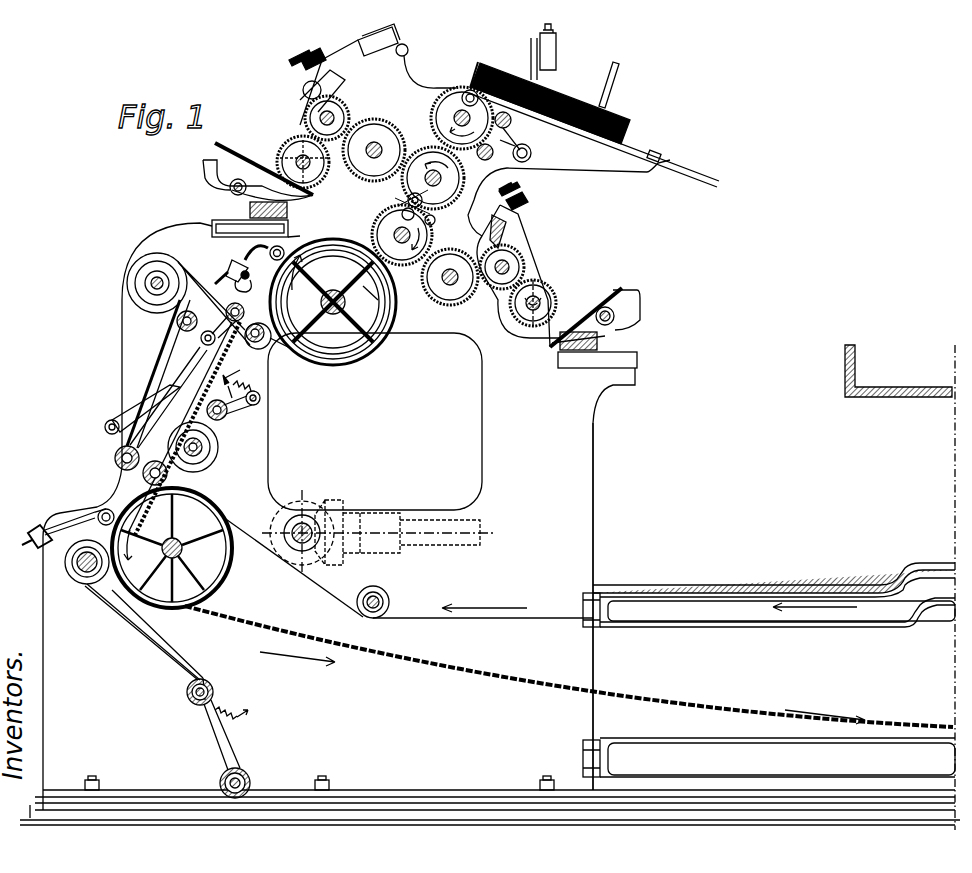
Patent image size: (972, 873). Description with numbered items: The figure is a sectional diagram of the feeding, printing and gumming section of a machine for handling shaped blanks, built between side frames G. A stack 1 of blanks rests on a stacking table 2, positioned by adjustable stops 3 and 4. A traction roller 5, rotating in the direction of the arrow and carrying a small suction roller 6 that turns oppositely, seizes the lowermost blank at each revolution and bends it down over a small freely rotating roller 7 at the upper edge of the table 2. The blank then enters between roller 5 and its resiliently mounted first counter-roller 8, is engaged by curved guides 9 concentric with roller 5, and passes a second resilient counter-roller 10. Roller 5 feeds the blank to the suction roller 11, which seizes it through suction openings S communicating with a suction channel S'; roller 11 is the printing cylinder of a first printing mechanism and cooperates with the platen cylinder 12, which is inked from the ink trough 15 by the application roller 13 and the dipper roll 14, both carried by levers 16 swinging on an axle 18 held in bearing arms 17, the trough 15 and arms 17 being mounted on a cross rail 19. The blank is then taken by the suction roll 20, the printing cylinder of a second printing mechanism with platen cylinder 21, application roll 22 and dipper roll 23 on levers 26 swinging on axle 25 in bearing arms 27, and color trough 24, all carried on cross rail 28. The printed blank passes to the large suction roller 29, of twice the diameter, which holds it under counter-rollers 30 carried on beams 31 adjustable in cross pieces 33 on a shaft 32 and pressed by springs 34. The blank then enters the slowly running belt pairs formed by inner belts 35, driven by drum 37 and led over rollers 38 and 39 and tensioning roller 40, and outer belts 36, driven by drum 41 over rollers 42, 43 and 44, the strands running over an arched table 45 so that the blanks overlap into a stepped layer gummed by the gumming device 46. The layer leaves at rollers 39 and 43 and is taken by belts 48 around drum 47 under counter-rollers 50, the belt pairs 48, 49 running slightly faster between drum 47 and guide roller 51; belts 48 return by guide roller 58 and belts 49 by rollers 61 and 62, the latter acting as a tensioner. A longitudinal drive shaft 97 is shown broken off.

The stack 1 is at (628, 122).
The stacking table 2 is at (668, 168).
The adjustable stop 3 is at (556, 58).
The adjustable stop 4 is at (617, 75).
The traction roller 5 is at (448, 90).
The small suction roller 6 is at (466, 92).
The roller 7 is at (478, 60).
The first counter-roller 8 is at (511, 122).
The curved guides 9 is at (485, 160).
The second counter-roller 10 is at (515, 157).
The suction roller 11 is at (424, 150).
The platen cylinder 12 is at (378, 120).
The application roller 13 is at (340, 104).
The dipper roll 14 is at (290, 140).
The ink trough 15 is at (255, 160).
The levers 16 is at (305, 108).
The bearing arms 17 is at (232, 192).
The axle 18 is at (230, 187).
The cross rail 19 is at (250, 210).
The suction roll 20 is at (375, 225).
The platen cylinder 21 is at (455, 252).
The application roll 22 is at (519, 262).
The dipper roll 23 is at (548, 292).
The color trough 24 is at (580, 305).
The axle 25 is at (614, 316).
The levers 26 is at (596, 272).
The bearing arms 27 is at (597, 341).
The cross rail 28 is at (637, 360).
The large roller 29 is at (385, 315).
The counter-rollers 30 is at (284, 250).
The cross beams 31 is at (260, 246).
The shaft 32 is at (250, 278).
The cross pieces 33 is at (232, 262).
The spring 34 is at (222, 278).
The inner belts 35 is at (250, 340).
The outer belts 36 is at (208, 345).
The drum 37 is at (210, 447).
The roller 38 is at (266, 346).
The roller 39 is at (165, 478).
The tensioning roller 40 is at (227, 414).
The drum 41 is at (127, 283).
The roller 42 is at (228, 306).
The roller 43 is at (115, 458).
The roller 44 is at (177, 322).
The table 45 is at (248, 372).
The gumming device 46 is at (160, 400).
The drum 47 is at (230, 555).
The inner belts 48 is at (890, 720).
The outer belts 49 is at (883, 795).
The counter-rollers 50 is at (100, 512).
The guide roller 51 is at (75, 575).
The guide roller 58 is at (396, 585).
The guide roller 61 is at (248, 775).
The tensioning roller 62 is at (187, 690).
The longitudinal shaft 97 is at (470, 540).
The suction openings S is at (334, 302).
The suction channel S' is at (361, 262).
The side frame G is at (593, 468).